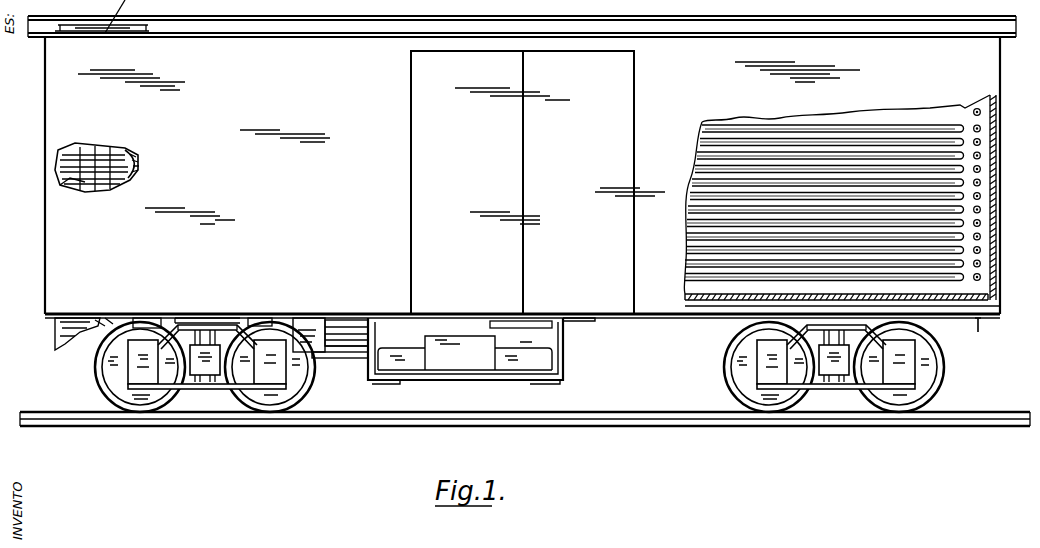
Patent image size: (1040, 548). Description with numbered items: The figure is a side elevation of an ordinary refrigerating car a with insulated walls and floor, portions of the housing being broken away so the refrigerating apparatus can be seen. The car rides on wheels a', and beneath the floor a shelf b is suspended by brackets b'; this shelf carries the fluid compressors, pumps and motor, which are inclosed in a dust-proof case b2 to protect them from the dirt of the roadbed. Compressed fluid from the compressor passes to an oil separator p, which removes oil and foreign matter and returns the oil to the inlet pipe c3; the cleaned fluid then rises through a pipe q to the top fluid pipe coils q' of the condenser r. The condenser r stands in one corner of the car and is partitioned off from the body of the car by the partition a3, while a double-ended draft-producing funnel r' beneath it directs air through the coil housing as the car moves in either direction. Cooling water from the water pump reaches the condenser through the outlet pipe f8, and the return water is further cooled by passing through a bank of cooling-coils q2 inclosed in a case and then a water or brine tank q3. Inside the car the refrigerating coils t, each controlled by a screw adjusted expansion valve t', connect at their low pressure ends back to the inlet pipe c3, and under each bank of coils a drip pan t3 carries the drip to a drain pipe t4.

The refrigerating car a is at (522, 177).
The wheels a' is at (501, 388).
The partition a3 is at (140, 158).
The shelf b is at (465, 363).
The brackets b' is at (476, 362).
The dust-proof case b2 is at (465, 345).
The inlet pipe c3 is at (346, 340).
The outlet pipe f8 is at (333, 362).
The oil separator p is at (150, 324).
The pipe q is at (346, 313).
The fluid pipe coils of the condenser q' is at (49, 188).
The bank of cooling-coils q2 is at (304, 322).
The water or brine tank q3 is at (258, 322).
The condenser r is at (76, 167).
The double-ended draft-producing funnel r' is at (63, 336).
The refrigerating coils t is at (840, 195).
The expansion valve t' is at (997, 195).
The drip pan t3 is at (722, 299).
The drain pipe t4 is at (980, 326).